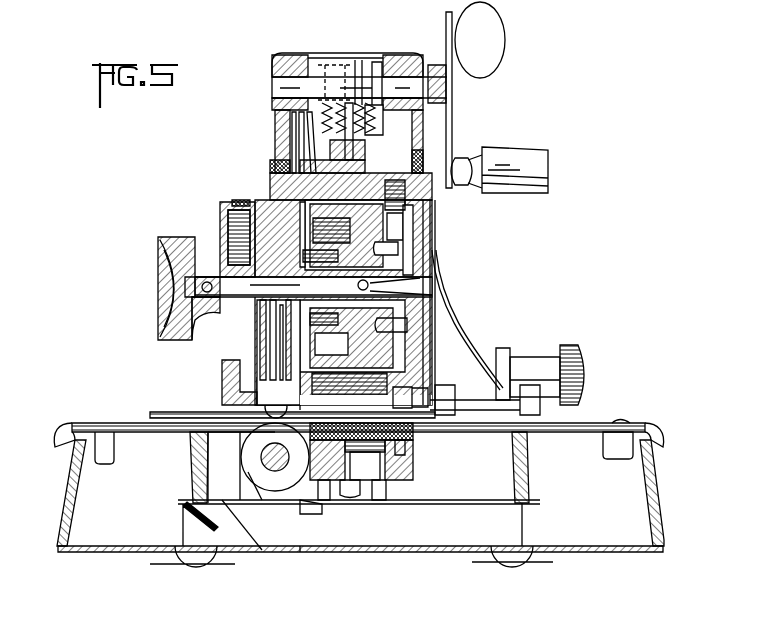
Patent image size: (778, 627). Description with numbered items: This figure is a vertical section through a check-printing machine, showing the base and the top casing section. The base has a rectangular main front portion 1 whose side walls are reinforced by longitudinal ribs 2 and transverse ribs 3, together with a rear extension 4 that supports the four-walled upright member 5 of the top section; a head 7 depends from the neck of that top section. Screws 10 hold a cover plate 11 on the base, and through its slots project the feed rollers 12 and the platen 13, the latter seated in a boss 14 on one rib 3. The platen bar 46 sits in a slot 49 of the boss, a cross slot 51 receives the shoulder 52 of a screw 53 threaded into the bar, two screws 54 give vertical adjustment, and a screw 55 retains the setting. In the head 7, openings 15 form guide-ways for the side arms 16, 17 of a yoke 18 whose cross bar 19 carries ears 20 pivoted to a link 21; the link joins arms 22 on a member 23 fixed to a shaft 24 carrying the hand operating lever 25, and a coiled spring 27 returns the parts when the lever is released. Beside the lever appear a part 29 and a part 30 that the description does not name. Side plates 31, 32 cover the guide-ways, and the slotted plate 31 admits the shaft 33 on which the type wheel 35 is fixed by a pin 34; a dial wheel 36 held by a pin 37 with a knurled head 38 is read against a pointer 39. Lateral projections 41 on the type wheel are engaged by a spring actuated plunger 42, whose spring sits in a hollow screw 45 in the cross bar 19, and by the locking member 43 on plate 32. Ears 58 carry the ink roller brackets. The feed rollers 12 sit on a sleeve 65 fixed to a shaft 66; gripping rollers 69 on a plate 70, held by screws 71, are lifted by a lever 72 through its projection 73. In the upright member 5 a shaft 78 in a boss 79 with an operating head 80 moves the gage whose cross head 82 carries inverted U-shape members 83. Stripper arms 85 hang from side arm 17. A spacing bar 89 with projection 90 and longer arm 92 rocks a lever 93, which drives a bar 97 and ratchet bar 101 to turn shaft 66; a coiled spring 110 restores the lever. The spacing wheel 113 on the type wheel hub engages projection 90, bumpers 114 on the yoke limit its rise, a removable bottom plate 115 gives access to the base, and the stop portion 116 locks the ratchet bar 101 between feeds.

The main front portion 1 is at (648, 478).
The longitudinally extending ribs 2 is at (217, 467).
The transversely extending ribs 3 is at (193, 460).
The rear extension 4 is at (294, 505).
The upright member 5 is at (462, 304).
The head 7 is at (407, 60).
The screws 10 is at (612, 421).
The cover plate 11 is at (152, 432).
The feed rollers 12 is at (244, 457).
The platen 13 is at (302, 437).
The boss 14 is at (412, 468).
The openings 15 is at (432, 340).
The side arm 16 is at (252, 205).
The side arm 17 is at (432, 222).
The yoke 18 is at (430, 198).
The cross bar 19 is at (368, 173).
The ears 20 is at (360, 146).
The link 21 is at (360, 70).
The arms 22 is at (383, 120).
The member 23 is at (350, 65).
The shaft 24 is at (278, 82).
The hand operating lever 25 is at (452, 118).
The coiled spring 27 is at (380, 75).
The disc 29 is at (505, 32).
The box 30 is at (512, 153).
The side plate 31 is at (275, 158).
The side plate 32 is at (432, 240).
The shaft 33 is at (215, 272).
The pin 34 is at (432, 285).
The type wheel 35 is at (351, 338).
The dial wheel 36 is at (222, 205).
The pin 37 is at (185, 290).
The knurled head 38 is at (160, 321).
The pointer 39 is at (238, 200).
The lateral projections 41 is at (400, 248).
The spring actuated plunger 42 is at (405, 222).
The member 43 is at (414, 395).
The hollow screw 45 is at (415, 165).
The bar 46 is at (279, 471).
The slot 49 is at (405, 445).
The slot 51 is at (413, 430).
The shoulder 52 is at (397, 498).
The screw 53 is at (405, 452).
The screws 54 is at (385, 500).
The screw 55 is at (358, 490).
The ears 58 is at (349, 384).
The sleeve 65 is at (272, 480).
The shaft 66 is at (200, 413).
The gripping rollers 69 is at (265, 407).
The plate 70 is at (264, 388).
The screws 71 is at (282, 345).
The lever 72 is at (260, 376).
The projection 73 is at (255, 387).
The shaft 78 is at (530, 358).
The boss 79 is at (502, 348).
The operating head 80 is at (582, 358).
The cross head 82 is at (480, 416).
The inverted U-shape members 83 is at (460, 398).
The arms 85 is at (400, 356).
The spacing bar 89 is at (275, 370).
The projection 90 is at (300, 359).
The longer arm 92 is at (300, 128).
The lever 93 is at (292, 118).
The bar 97 is at (315, 514).
The ratchet bar 101 is at (247, 542).
The coiled spring 110 is at (309, 145).
The spacing wheel 113 is at (270, 360).
The bumpers 114 is at (272, 167).
The bottom plate 115 is at (332, 552).
The stop portion 116 is at (200, 518).